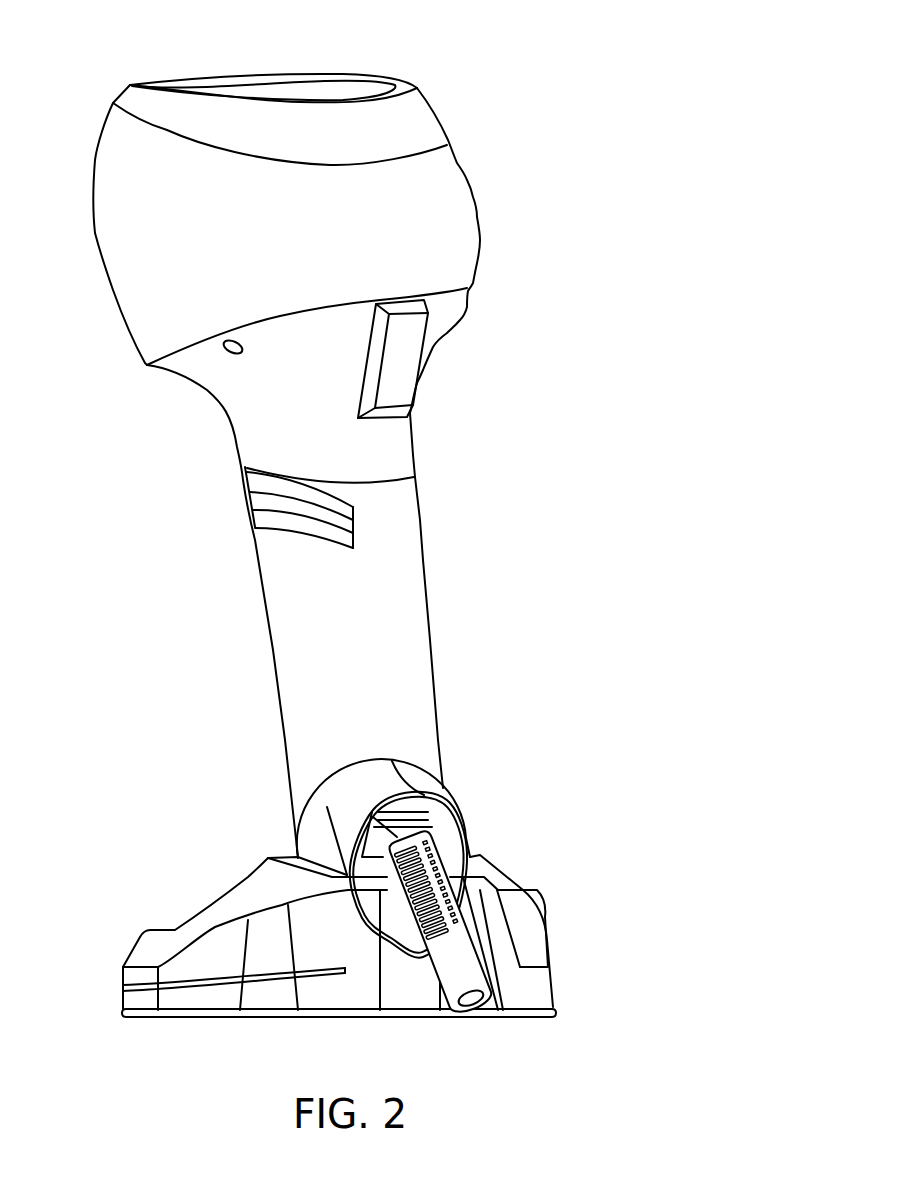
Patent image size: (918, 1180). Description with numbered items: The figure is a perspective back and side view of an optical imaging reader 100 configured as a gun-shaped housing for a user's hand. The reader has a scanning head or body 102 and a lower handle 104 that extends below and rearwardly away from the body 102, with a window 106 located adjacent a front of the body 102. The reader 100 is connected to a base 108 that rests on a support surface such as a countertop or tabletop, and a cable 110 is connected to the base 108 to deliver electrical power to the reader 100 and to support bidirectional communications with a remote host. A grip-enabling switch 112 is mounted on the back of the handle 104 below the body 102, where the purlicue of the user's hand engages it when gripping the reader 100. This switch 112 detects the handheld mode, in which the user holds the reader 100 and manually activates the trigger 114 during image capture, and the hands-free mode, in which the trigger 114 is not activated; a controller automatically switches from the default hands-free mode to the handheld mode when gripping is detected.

The optical imaging reader 100 is at (505, 50).
The scanning head or body 102 is at (457, 210).
The lower handle 104 is at (412, 675).
The window 106 is at (95, 232).
The base 108 is at (210, 917).
The cable 110 is at (460, 822).
The grip-enabling switch 112 is at (402, 360).
The switch or trigger 114 is at (237, 480).